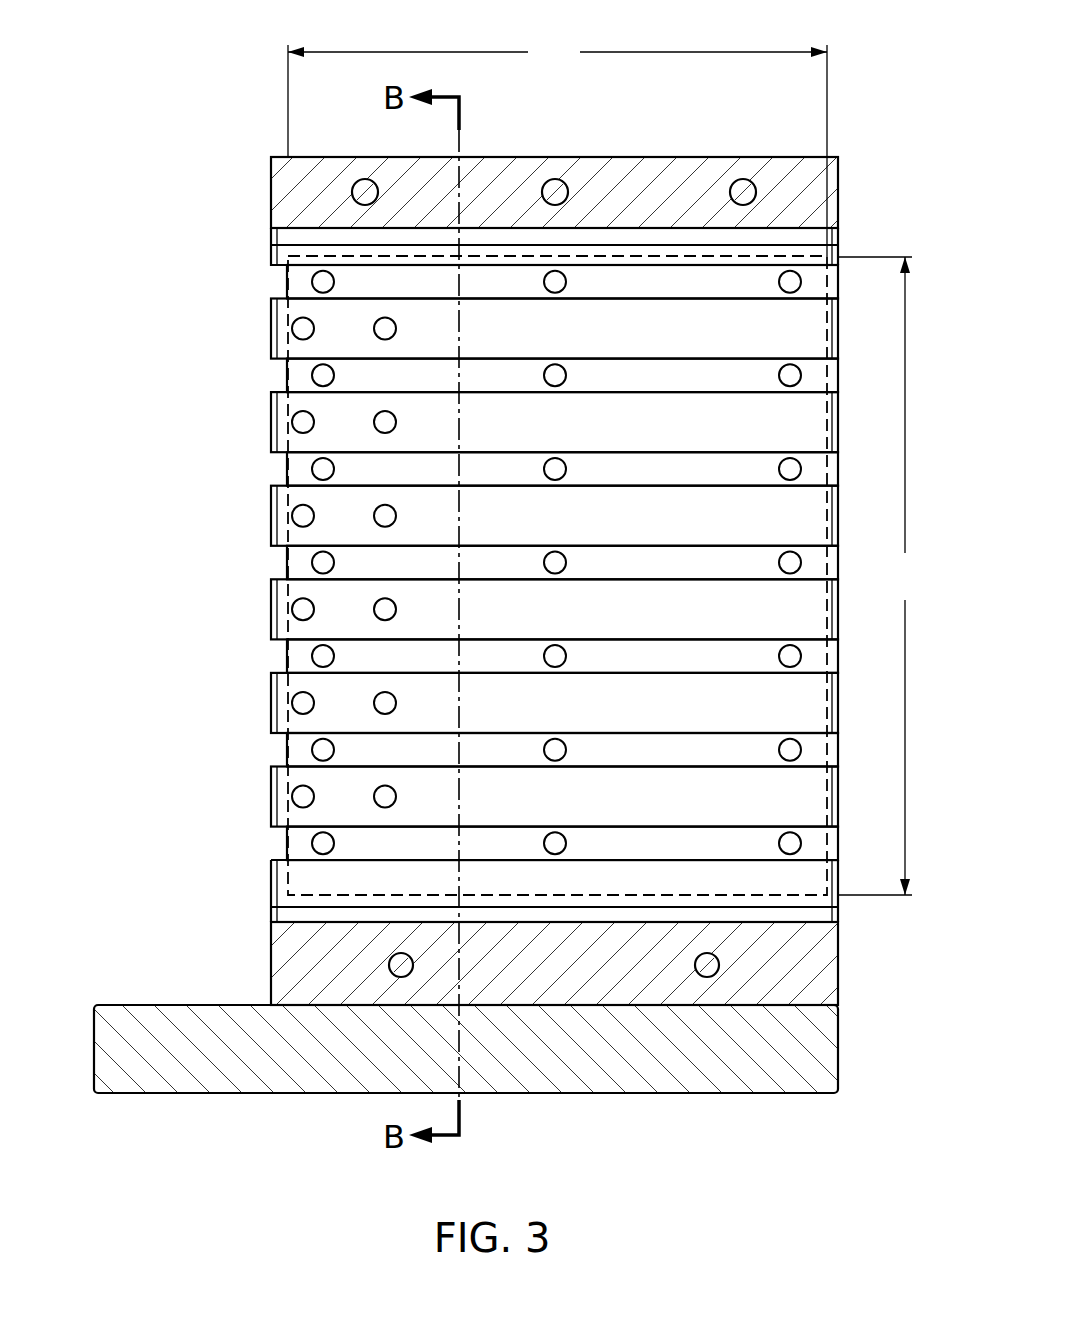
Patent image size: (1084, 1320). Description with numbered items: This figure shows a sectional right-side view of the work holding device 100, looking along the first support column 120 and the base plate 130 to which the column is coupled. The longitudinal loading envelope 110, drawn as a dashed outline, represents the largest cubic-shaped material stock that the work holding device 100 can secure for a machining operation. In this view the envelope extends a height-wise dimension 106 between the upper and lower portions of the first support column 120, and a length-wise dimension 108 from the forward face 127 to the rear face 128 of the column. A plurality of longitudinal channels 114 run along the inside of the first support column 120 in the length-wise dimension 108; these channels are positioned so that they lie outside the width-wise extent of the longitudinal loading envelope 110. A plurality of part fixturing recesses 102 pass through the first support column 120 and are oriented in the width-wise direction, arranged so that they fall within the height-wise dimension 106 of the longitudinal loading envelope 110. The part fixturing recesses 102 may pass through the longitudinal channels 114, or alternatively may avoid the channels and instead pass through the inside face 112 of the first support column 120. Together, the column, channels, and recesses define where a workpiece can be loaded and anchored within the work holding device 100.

The work holding device 100 is at (168, 100).
The part fixturing recesses 102 is at (325, 466).
The height-wise dimension 106 is at (882, 576).
The length-wise dimension 108 is at (557, 148).
The longitudinal loading envelope 110 is at (833, 254).
The inside face 112 is at (617, 508).
The longitudinal channels 114 is at (687, 462).
The first support column 120 is at (568, 153).
The forward face 127 is at (270, 198).
The rear face 128 is at (838, 970).
The base plate 130 is at (186, 998).